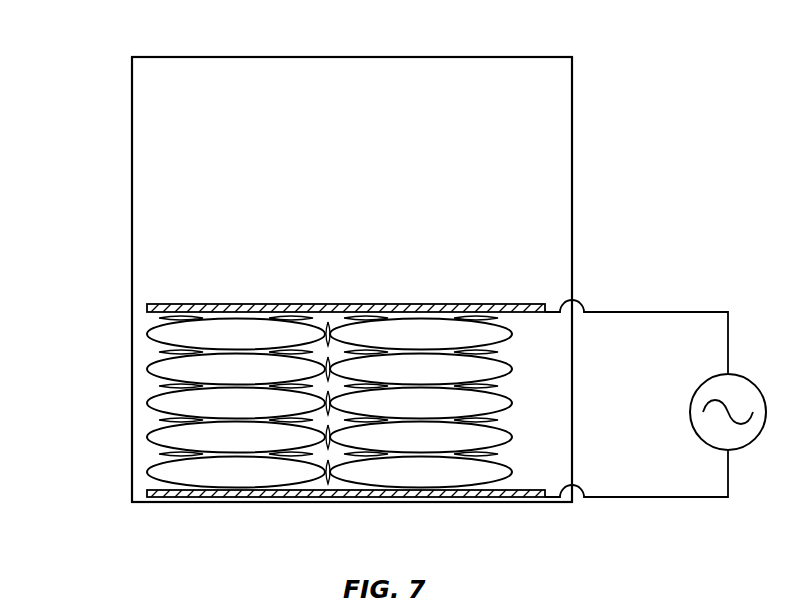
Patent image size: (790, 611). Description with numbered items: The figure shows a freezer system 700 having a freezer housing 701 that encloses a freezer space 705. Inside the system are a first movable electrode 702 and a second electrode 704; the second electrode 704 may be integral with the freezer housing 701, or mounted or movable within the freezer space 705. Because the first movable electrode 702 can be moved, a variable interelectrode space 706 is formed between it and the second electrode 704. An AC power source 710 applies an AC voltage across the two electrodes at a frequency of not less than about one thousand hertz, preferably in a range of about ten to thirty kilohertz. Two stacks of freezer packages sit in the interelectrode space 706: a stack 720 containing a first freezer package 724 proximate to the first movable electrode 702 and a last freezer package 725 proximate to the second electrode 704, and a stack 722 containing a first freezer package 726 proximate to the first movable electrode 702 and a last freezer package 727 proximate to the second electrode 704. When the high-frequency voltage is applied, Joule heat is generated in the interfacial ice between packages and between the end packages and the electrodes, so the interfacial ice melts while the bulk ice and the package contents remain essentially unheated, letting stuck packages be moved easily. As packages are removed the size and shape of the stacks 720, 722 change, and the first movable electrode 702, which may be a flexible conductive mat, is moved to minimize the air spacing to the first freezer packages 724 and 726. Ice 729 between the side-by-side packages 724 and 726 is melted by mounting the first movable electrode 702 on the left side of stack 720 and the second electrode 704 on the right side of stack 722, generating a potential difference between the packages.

The freezer system 700 is at (104, 16).
The freezer housing 701 is at (131, 172).
The first movable electrode 702 is at (395, 304).
The second electrode 704 is at (481, 498).
The freezer space 705 is at (363, 184).
The variable interelectrode space 706 is at (543, 352).
The AC power source 710 is at (757, 438).
The stack of freezer packages 720 is at (286, 374).
The stack of freezer packages 722 is at (539, 386).
The first freezer package 724 is at (248, 346).
The last freezer package 725 is at (248, 484).
The first freezer package 726 is at (438, 346).
The last freezer package 727 is at (438, 484).
The ice 729 is at (331, 338).